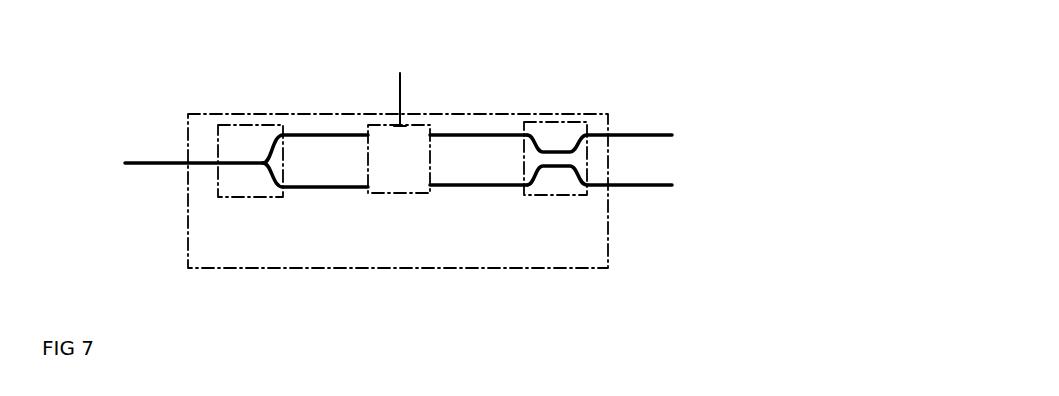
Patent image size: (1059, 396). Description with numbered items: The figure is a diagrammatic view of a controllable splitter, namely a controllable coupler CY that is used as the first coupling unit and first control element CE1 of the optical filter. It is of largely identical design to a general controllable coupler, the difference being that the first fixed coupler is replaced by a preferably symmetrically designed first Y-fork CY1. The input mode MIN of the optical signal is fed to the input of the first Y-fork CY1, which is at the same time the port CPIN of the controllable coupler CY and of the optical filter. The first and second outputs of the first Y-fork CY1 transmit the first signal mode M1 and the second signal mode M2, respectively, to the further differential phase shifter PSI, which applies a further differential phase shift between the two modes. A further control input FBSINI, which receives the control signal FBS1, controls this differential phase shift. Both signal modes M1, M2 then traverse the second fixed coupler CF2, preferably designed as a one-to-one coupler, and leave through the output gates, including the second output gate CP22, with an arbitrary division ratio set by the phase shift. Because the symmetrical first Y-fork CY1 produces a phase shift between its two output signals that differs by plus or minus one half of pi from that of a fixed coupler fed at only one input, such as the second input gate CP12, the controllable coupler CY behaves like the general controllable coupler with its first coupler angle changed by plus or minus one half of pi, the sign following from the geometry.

The output of the controllable coupler CPIN is at (185, 158).
The input mode MIN is at (150, 179).
The first Y-fork CY1 is at (263, 199).
The further differential phase shifter PSI is at (397, 193).
The feedback control signal FBS1 is at (387, 97).
The further control input FBSINI is at (394, 126).
The controllable coupler CY is at (580, 84).
The coupling element CE1 is at (551, 190).
The second fixed coupler CF2 is at (565, 197).
The second input gate CP12 is at (610, 133).
The second output gate CP22 is at (609, 200).
The first signal mode M1 is at (319, 148).
The second signal mode M2 is at (319, 200).